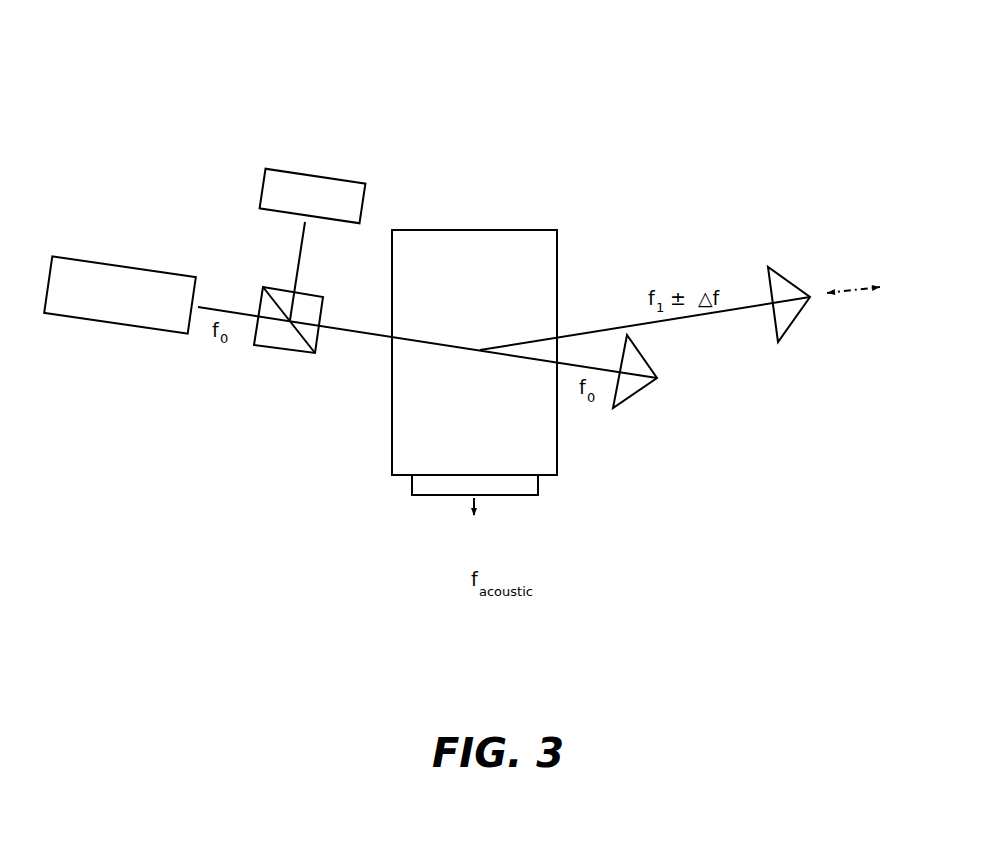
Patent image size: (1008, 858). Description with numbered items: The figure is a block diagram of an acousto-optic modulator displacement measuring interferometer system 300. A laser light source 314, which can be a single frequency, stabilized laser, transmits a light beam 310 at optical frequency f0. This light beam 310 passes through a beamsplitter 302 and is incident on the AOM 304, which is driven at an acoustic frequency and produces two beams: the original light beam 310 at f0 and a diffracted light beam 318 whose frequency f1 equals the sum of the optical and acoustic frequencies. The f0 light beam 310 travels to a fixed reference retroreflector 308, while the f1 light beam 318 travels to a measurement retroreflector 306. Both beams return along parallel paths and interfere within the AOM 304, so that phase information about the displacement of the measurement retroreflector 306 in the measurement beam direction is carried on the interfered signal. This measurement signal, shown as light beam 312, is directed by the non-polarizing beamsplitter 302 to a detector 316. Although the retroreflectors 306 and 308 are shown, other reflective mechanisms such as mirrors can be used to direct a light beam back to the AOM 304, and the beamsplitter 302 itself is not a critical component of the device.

The AOM DMI system 300 is at (102, 82).
The beamsplitter 302 is at (283, 353).
The AOM 304 is at (390, 453).
The measurement retroreflector 306 is at (806, 259).
The reference retroreflector 308 is at (628, 403).
The light beam 310 is at (240, 310).
The light beam 312 is at (295, 267).
The laser light source 314 is at (93, 262).
The detector 316 is at (308, 172).
The diffracted light beam 318 is at (717, 313).